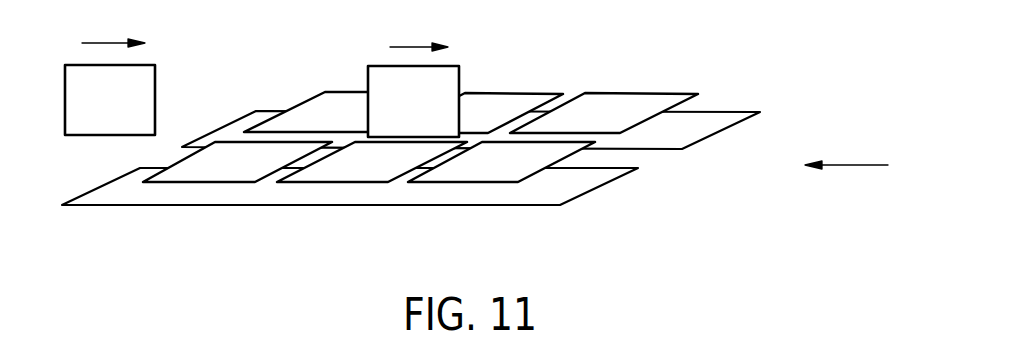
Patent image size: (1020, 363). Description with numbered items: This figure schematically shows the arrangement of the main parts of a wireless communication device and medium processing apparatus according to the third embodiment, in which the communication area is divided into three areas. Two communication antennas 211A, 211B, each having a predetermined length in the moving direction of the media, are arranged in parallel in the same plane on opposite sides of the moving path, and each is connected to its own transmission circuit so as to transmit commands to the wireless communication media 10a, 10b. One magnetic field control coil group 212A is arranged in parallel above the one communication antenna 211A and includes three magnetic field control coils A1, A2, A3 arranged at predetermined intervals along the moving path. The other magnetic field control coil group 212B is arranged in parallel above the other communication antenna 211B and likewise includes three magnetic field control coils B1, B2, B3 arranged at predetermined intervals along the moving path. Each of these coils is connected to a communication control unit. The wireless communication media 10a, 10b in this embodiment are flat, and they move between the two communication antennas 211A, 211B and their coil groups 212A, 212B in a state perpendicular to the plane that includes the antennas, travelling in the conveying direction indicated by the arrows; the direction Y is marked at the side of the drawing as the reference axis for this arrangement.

The wireless communication medium 10a is at (378, 65).
The wireless communication medium 10b is at (73, 63).
The magnetic field control coil B1 is at (327, 91).
The magnetic field control coil B2 is at (515, 92).
The magnetic field control coil B3 is at (633, 92).
The magnetic field control coil A1 is at (197, 183).
The magnetic field control coil A2 is at (342, 183).
The magnetic field control coil A3 is at (458, 183).
The communication antenna 211A is at (598, 189).
The communication antenna 211B is at (715, 138).
The magnetic field control coil group 212A is at (369, 197).
The magnetic field control coil group 212B is at (513, 83).
The Y direction Y is at (846, 153).